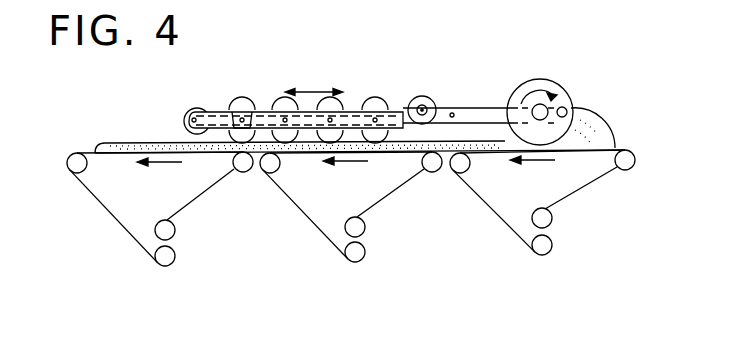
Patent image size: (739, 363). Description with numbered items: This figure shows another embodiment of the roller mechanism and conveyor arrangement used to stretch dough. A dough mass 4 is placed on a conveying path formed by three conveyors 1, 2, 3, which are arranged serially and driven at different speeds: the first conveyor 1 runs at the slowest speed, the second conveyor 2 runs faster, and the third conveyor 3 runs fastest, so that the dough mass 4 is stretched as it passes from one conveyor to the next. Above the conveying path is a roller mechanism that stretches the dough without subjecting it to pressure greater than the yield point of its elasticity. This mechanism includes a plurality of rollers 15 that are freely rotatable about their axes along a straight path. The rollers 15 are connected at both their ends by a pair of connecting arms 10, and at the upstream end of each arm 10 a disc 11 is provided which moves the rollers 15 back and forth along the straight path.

The first conveyor 1 is at (588, 188).
The second conveyor 2 is at (395, 193).
The third conveyor 3 is at (202, 198).
The dough mass 4 is at (606, 114).
The connecting arms 10 is at (215, 120).
The disc 11 is at (536, 80).
The rollers 15 is at (380, 107).